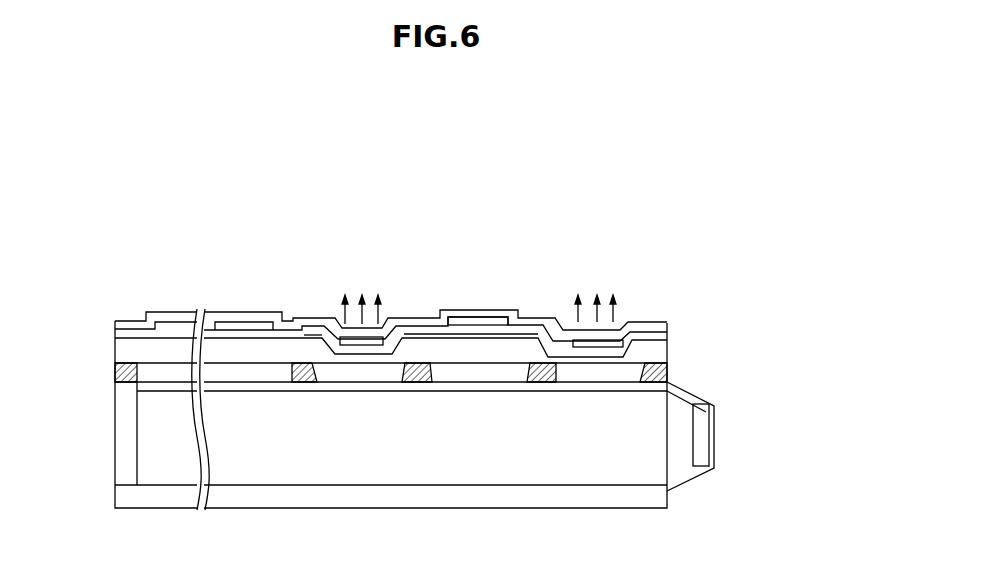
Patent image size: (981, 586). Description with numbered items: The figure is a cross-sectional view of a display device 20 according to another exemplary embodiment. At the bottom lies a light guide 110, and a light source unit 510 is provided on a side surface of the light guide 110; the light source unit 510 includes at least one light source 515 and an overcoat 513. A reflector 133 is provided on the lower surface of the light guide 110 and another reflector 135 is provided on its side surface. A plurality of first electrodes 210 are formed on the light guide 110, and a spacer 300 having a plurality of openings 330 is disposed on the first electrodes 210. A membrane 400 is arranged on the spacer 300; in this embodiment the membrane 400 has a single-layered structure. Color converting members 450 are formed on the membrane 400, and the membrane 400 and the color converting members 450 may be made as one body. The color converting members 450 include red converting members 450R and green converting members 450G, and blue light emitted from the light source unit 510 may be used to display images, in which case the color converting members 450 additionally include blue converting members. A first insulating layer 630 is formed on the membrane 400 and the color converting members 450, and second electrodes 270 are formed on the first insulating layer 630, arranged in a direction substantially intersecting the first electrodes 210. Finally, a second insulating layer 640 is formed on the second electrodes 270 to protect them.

The display device 20 is at (308, 200).
The light guide 110 is at (598, 470).
The reflector 133 is at (425, 500).
The reflector 135 is at (125, 438).
The first electrodes 210 is at (358, 388).
The second electrodes 270 is at (248, 325).
The spacer 300 is at (120, 376).
The openings 330 is at (220, 372).
The membrane 400 is at (546, 333).
The color converting members 450 is at (475, 255).
The red converting members 450R is at (402, 338).
The green converting members 450G is at (465, 322).
The light source unit 510 is at (773, 383).
The overcoat 513 is at (700, 394).
The light source 515 is at (712, 468).
The first insulating layer 630 is at (657, 335).
The second insulating layer 640 is at (650, 327).